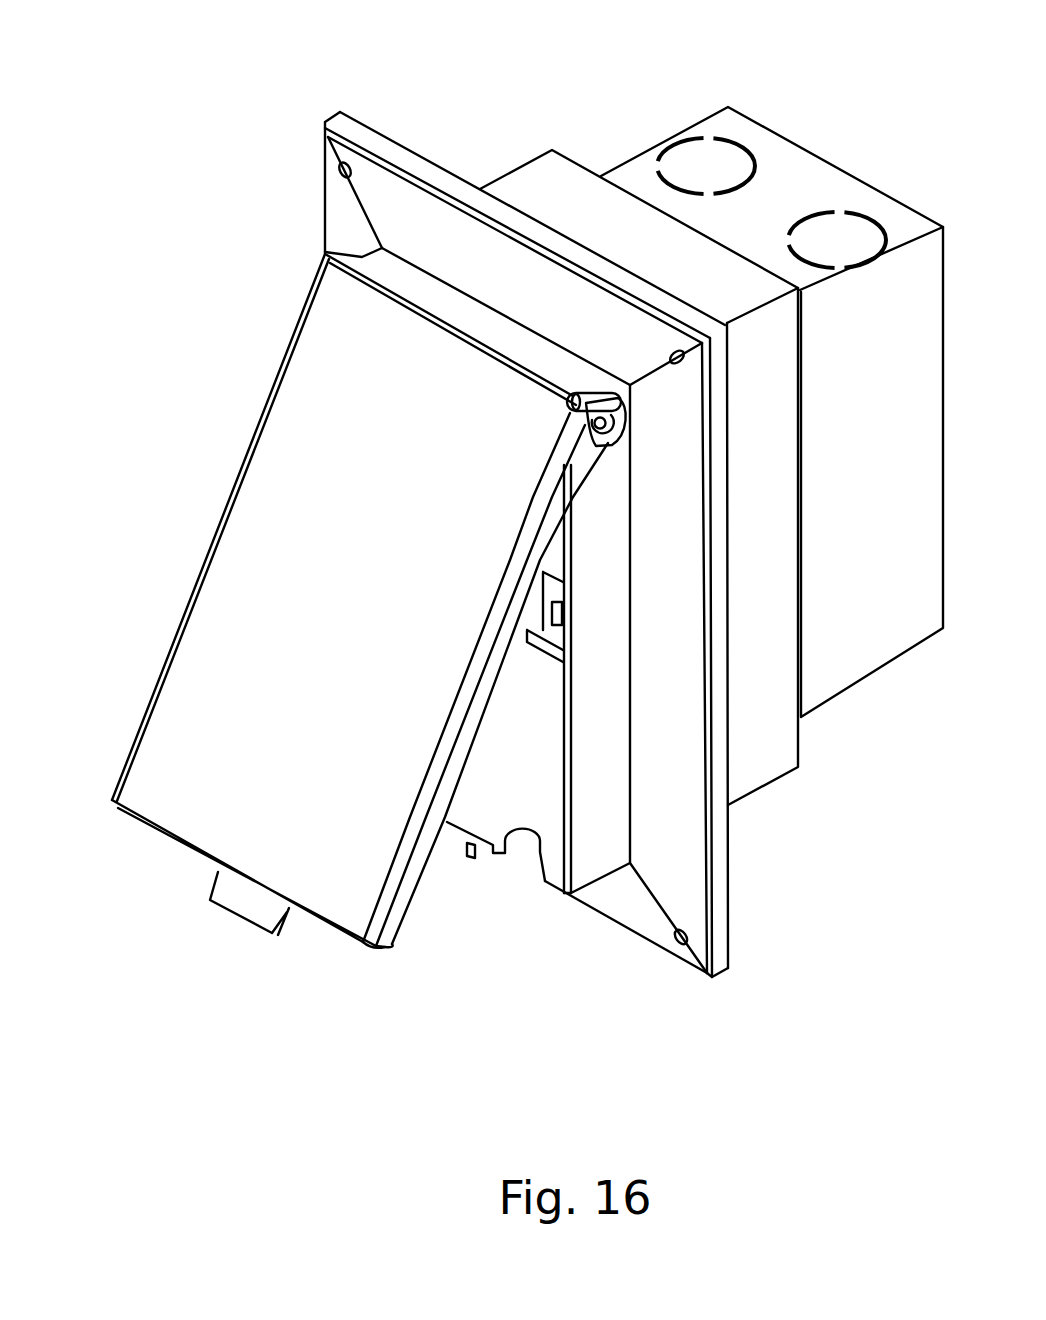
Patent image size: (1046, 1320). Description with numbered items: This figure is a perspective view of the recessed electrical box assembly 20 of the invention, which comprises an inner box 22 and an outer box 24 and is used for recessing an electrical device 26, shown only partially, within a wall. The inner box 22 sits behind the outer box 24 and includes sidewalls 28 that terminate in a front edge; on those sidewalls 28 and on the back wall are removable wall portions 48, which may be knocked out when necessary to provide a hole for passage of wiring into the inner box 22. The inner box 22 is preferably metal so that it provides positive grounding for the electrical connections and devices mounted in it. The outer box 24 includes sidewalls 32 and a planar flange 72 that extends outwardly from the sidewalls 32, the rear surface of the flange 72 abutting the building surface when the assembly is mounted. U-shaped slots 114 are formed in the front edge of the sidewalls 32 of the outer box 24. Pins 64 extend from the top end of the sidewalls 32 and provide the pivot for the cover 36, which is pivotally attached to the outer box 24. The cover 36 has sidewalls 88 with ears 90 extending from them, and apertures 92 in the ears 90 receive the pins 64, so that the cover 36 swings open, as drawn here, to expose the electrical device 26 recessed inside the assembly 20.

The electrical box assembly 20 is at (168, 272).
The inner box 22 is at (822, 172).
The outer box 24 is at (530, 176).
The electrical device 26 is at (545, 614).
The sidewalls 28 is at (851, 470).
The sidewalls 32 is at (750, 535).
The cover 36 is at (340, 533).
The removable wall portions 48 is at (686, 182).
The pins 64 is at (603, 447).
The flange 72 is at (653, 683).
The sidewalls 88 is at (435, 790).
The ears 90 is at (612, 396).
The apertures 92 is at (576, 422).
The U-shaped slots 114 is at (517, 850).